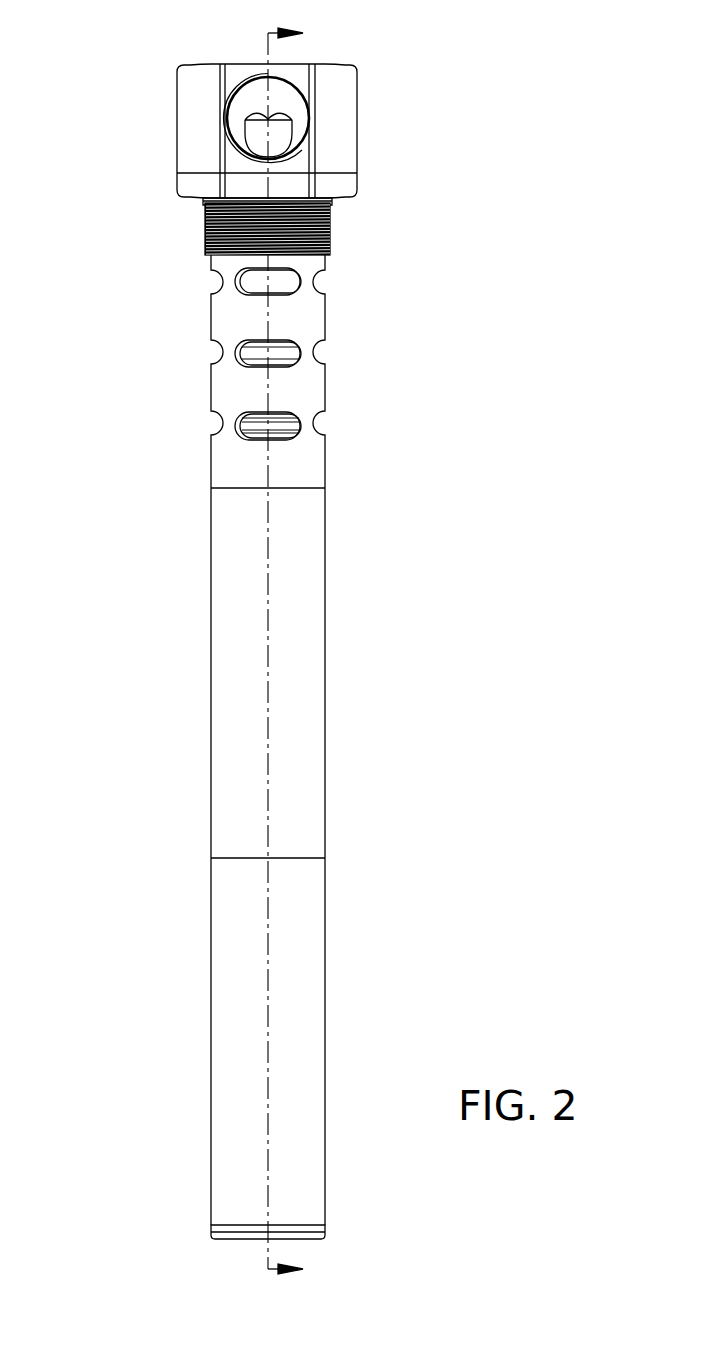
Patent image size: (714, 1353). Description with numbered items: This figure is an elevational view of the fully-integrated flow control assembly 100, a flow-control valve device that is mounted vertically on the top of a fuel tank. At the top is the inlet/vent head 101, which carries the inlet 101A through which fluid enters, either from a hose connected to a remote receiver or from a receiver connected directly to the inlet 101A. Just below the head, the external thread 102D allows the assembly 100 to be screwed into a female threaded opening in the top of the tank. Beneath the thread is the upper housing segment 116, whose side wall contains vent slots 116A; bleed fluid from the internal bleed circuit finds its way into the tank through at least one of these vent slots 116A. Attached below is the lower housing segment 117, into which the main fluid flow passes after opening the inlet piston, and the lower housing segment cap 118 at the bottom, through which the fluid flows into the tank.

The fully-integrated flow control assembly 100 is at (124, 66).
The inlet/vent head 101 is at (199, 107).
The inlet 101A is at (218, 138).
The external thread 102D is at (196, 237).
The upper housing segment 116 is at (222, 300).
The vent slots 116A is at (251, 301).
The lower housing segment 117 is at (235, 662).
The lower housing segment cap 118 is at (253, 1231).